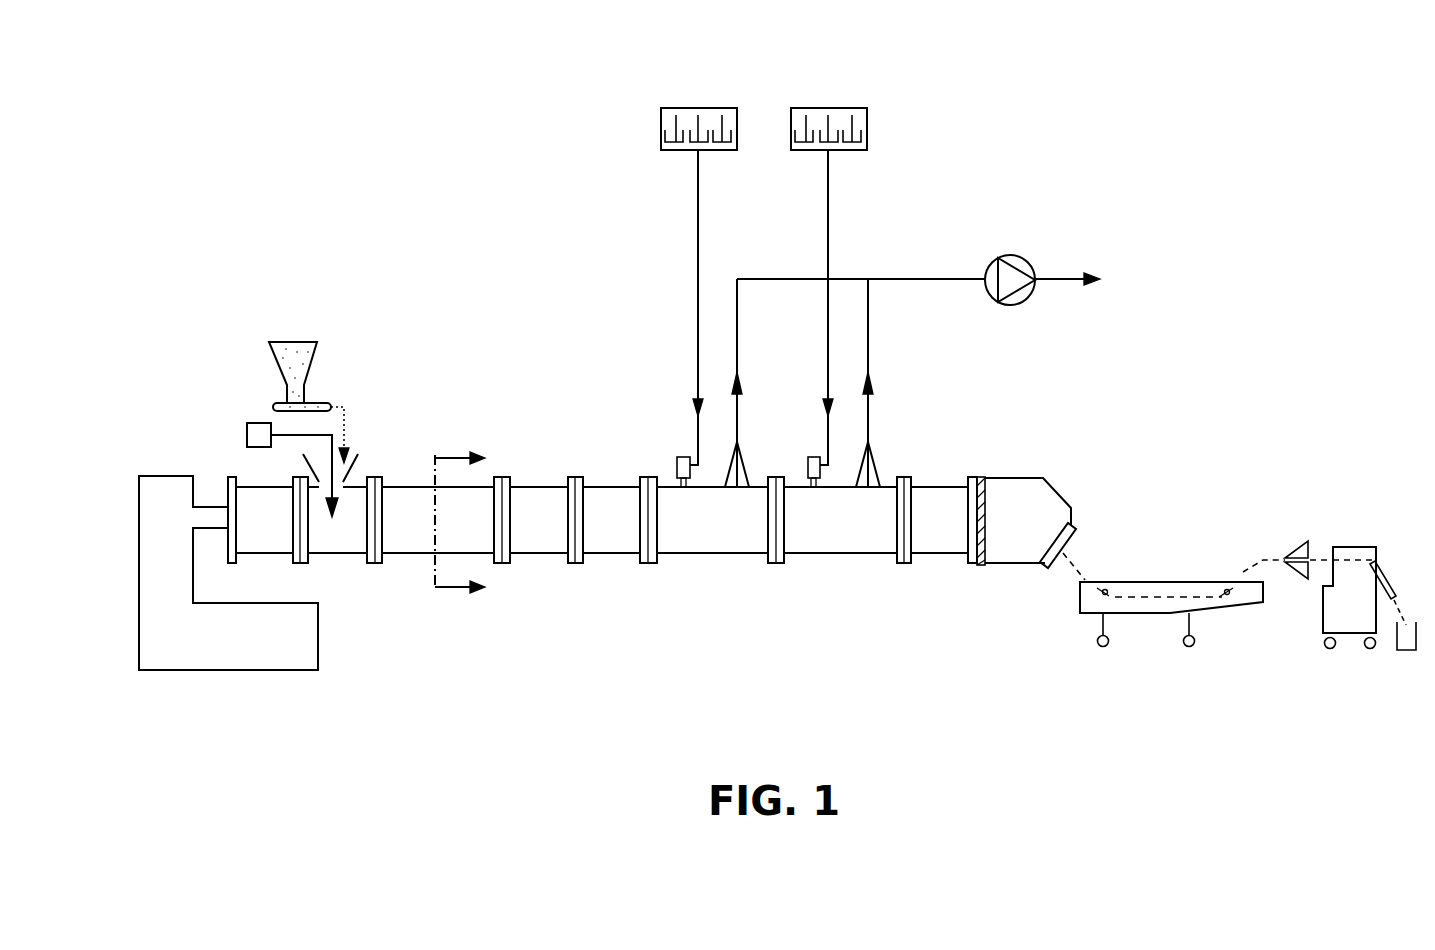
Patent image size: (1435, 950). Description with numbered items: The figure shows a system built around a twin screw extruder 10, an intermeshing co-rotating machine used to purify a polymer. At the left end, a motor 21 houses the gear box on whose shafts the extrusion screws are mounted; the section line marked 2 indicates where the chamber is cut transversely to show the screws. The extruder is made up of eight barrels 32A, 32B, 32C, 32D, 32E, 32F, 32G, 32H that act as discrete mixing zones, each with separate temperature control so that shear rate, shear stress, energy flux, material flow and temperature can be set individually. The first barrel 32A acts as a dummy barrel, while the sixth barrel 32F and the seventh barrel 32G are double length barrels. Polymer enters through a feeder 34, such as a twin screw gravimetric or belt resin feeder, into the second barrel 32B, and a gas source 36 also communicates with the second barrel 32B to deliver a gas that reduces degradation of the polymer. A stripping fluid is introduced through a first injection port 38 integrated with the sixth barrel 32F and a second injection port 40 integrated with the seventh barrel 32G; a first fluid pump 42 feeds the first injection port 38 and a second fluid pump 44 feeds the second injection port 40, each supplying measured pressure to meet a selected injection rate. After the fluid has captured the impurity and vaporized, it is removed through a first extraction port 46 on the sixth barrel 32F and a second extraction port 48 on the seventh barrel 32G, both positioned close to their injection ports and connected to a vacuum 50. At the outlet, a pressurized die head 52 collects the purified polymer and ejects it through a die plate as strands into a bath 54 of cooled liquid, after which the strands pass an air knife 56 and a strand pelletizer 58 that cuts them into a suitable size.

The twin screw extruder 10 is at (712, 690).
The motor 21 is at (160, 645).
The section line 2 is at (460, 521).
The first barrel 32A is at (258, 553).
The second barrel 32B is at (341, 553).
The barrel 32C is at (389, 487).
The barrel 32D is at (521, 553).
The barrel 32E is at (608, 487).
The sixth barrel 32F is at (682, 553).
The seventh barrel 32G is at (843, 553).
The barrel 32H is at (937, 495).
The feeder 34 is at (303, 361).
The gas source 36 is at (257, 427).
The first injection port 38 is at (680, 457).
The second injection port 40 is at (813, 457).
The first fluid pump 42 is at (697, 108).
The second fluid pump 44 is at (840, 108).
The first extraction port 46 is at (740, 446).
The second extraction port 48 is at (871, 446).
The vacuum 50 is at (1018, 257).
The die head 52 is at (1049, 498).
The bath 54 is at (1165, 582).
The air knife 56 is at (1300, 541).
The strand pelletizer 58 is at (1356, 553).